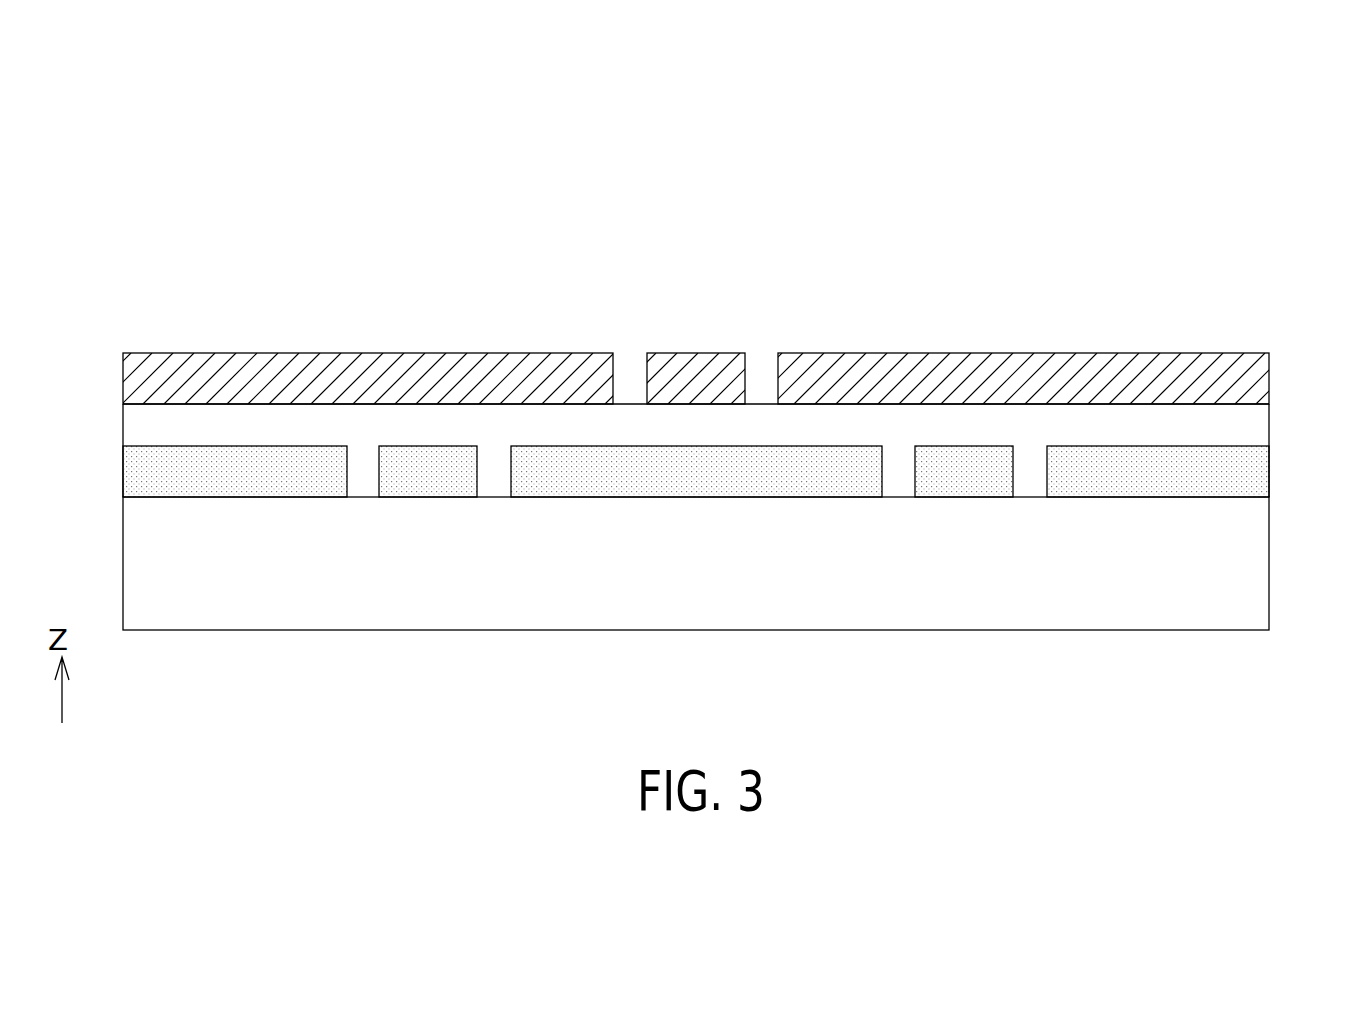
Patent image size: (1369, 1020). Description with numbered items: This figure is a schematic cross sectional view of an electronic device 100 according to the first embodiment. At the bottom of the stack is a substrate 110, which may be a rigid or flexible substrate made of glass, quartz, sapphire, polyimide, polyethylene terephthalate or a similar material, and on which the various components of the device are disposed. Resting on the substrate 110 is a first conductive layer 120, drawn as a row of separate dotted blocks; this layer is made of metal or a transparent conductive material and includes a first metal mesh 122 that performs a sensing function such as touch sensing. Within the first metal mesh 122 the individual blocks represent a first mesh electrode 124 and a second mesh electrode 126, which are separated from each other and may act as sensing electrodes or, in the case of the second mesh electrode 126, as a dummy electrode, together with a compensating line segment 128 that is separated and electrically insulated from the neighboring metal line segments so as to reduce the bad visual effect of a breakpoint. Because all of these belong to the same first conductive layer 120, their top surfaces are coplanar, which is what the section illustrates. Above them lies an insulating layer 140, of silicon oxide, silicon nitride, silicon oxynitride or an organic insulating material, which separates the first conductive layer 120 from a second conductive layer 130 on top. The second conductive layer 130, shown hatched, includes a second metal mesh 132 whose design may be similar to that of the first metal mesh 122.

The electronic device 100 is at (1158, 120).
The substrate 110 is at (1255, 557).
The first conductive layer 120 is at (696, 356).
The first metal mesh 122 is at (696, 356).
The first mesh electrode 124 is at (696, 393).
The second mesh electrode 126 is at (295, 460).
The compensating line segment 128 is at (430, 460).
The second conductive layer 130 is at (693, 340).
The second metal mesh 132 is at (1031, 372).
The insulating layer 140 is at (1255, 428).